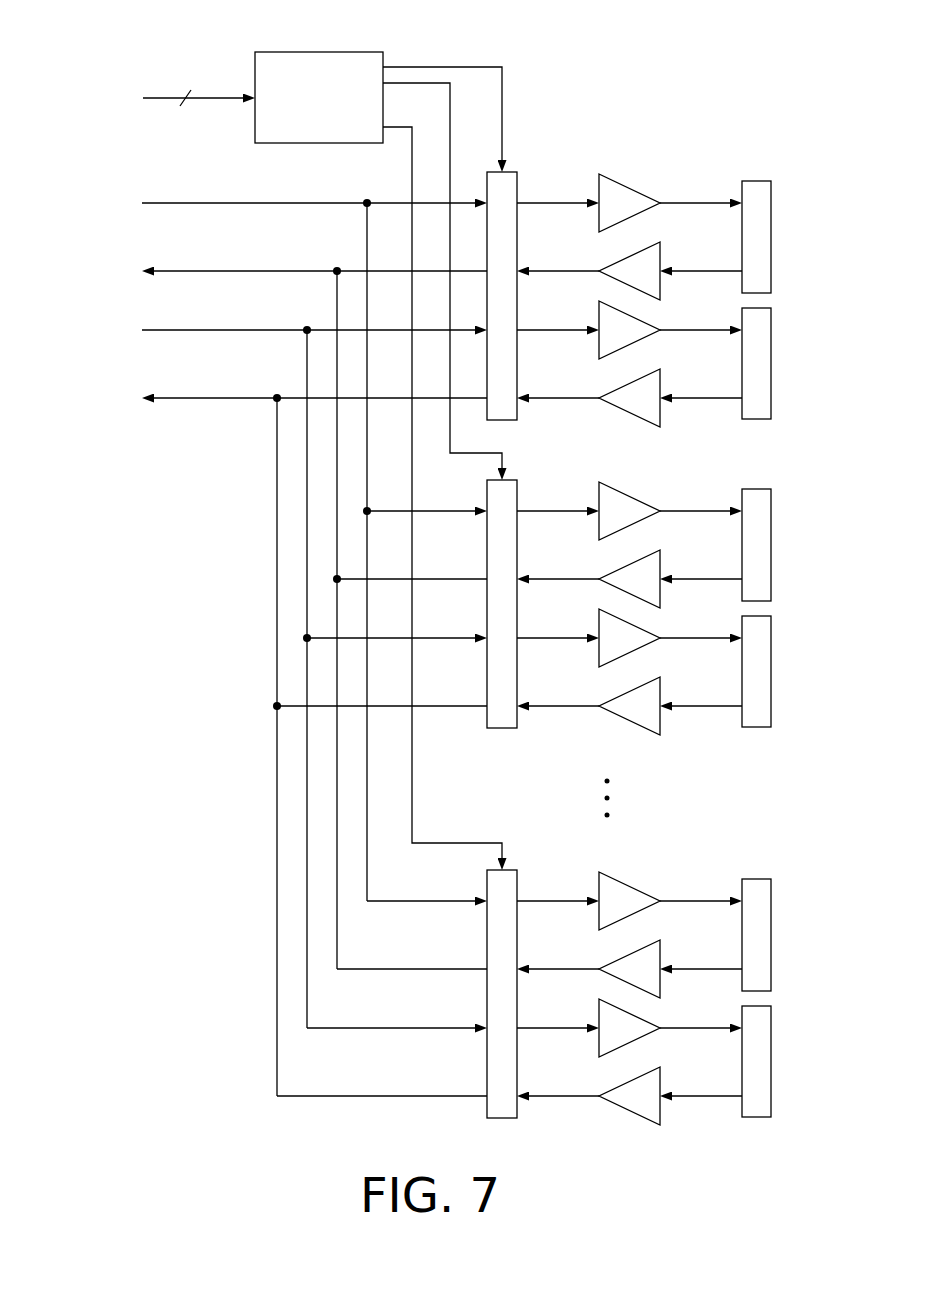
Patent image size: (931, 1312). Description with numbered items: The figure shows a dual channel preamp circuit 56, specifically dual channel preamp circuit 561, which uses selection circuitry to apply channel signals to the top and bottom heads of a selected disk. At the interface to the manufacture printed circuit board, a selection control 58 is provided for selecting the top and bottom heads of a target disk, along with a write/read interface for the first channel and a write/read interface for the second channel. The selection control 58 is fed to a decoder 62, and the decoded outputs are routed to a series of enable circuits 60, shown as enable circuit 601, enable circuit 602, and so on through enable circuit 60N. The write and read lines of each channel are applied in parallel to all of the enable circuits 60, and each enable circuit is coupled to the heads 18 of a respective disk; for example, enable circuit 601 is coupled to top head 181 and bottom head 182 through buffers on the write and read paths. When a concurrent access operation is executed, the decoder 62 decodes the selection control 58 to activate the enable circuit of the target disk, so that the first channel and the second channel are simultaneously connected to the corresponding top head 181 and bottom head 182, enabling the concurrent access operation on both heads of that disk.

The dual channel preamp circuit 56 is at (437, 566).
The dual channel preamp circuit 561 is at (614, 72).
The decoder 62 is at (318, 52).
The selection control 58 is at (215, 105).
The enable circuits 60 is at (525, 631).
The enable circuit 601 is at (517, 188).
The enable circuit 602 is at (517, 496).
The enable circuit 60N is at (517, 886).
The heads 18 is at (787, 300).
The top head 181 is at (771, 233).
The bottom head 182 is at (771, 364).